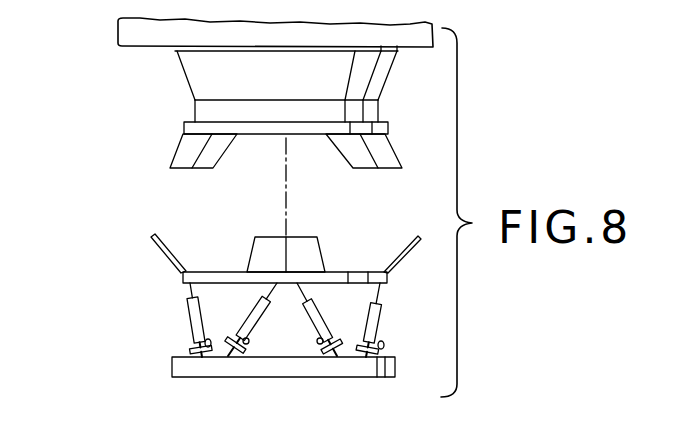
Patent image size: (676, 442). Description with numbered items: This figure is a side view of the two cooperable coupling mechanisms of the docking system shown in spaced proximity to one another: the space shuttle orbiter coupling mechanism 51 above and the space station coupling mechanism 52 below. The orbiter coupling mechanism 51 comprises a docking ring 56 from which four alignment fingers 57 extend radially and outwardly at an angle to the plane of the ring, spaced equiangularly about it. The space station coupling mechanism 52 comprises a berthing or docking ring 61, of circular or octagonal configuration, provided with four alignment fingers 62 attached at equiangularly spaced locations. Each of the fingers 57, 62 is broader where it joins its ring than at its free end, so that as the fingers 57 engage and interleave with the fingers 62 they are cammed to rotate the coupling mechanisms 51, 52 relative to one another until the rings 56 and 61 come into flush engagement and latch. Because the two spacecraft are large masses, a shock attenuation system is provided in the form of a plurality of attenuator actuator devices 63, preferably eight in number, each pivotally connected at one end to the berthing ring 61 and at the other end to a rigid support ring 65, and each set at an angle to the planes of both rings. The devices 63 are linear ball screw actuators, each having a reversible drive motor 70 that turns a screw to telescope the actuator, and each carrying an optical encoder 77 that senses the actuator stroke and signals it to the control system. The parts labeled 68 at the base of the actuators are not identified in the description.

The coupling mechanism 51 is at (165, 73).
The coupling mechanism 52 is at (112, 323).
The docking ring 56 is at (183, 126).
The alignment fingers 57 is at (178, 150).
The berthing ring 61 is at (183, 275).
The alignment fingers 62 is at (252, 256).
The attenuator actuator devices 63 is at (188, 311).
The support ring 65 is at (172, 368).
The base mounting rods 68 is at (225, 356).
The reversible drive motor 70 is at (189, 348).
The optical encoder 77 is at (209, 340).